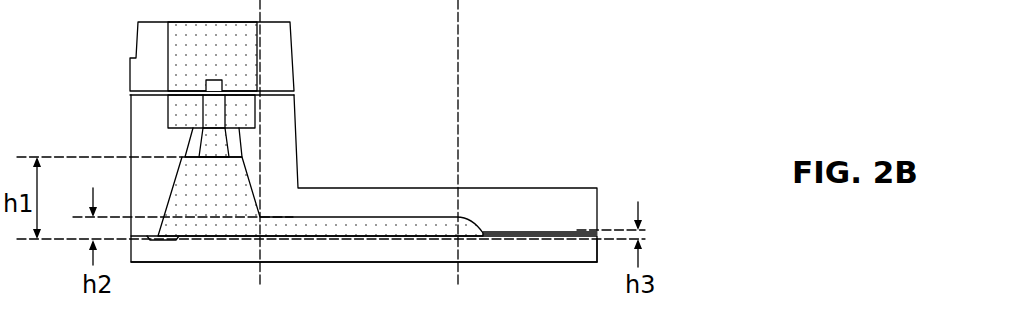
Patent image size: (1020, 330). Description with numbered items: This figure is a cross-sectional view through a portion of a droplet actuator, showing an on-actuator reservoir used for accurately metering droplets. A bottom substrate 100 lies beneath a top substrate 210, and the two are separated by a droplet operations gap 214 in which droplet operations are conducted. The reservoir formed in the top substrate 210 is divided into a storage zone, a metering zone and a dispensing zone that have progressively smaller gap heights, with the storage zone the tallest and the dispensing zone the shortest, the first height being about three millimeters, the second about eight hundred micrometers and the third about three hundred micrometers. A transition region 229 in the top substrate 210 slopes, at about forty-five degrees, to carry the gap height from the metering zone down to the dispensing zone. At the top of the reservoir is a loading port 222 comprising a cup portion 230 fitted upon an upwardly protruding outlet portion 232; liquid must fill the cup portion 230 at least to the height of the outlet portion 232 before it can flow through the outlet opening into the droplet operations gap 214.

The bottom substrate 100 is at (362, 250).
The droplet operations gap 214 is at (557, 237).
The package body 210 is at (296, 105).
The transition region 229 is at (476, 222).
The loading port 222 is at (273, 58).
The cup portion 230 is at (165, 38).
The outlet portion 232 is at (205, 83).